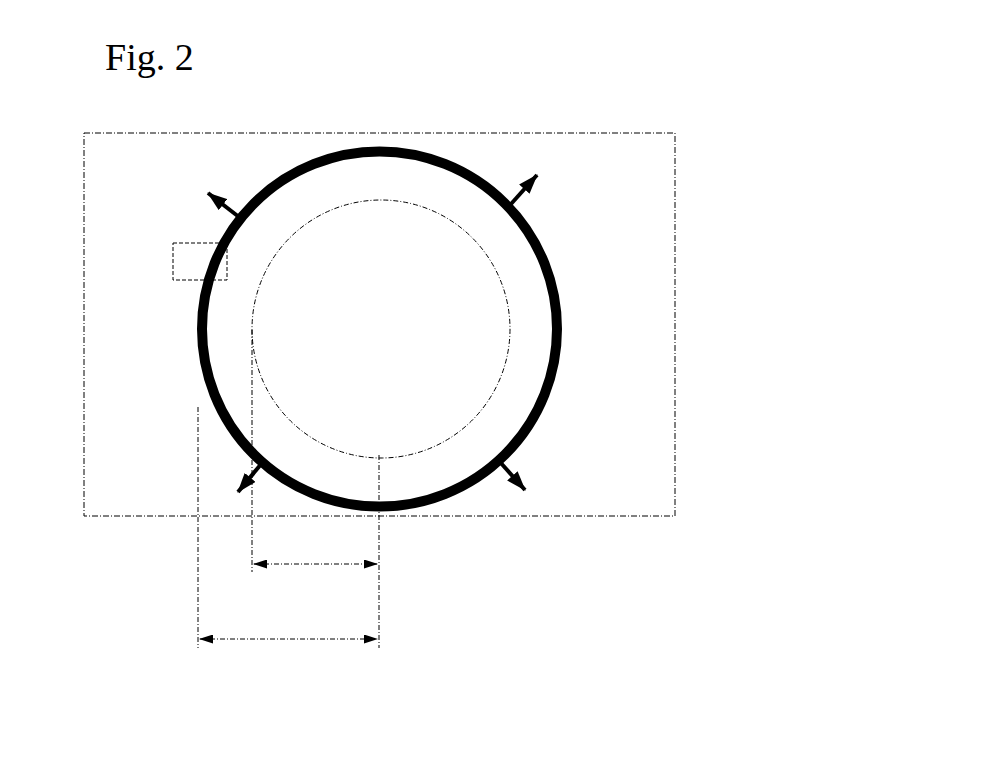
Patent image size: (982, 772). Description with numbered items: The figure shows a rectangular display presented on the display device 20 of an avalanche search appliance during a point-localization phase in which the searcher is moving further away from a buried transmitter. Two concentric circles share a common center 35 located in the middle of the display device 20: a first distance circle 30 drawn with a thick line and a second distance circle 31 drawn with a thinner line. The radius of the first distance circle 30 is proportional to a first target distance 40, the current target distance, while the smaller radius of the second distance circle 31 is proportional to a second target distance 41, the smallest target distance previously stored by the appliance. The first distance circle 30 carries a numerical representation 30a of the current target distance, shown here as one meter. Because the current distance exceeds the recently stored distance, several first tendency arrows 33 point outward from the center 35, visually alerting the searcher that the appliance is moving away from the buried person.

The display device 20 is at (676, 323).
The first distance circle 30 is at (566, 326).
The numerical representation 30a is at (172, 262).
The second distance circle 31 is at (512, 330).
The first tendency arrows 33 is at (228, 192).
The common center 35 is at (394, 322).
The first target distance 40 is at (287, 527).
The second target distance 41 is at (315, 489).